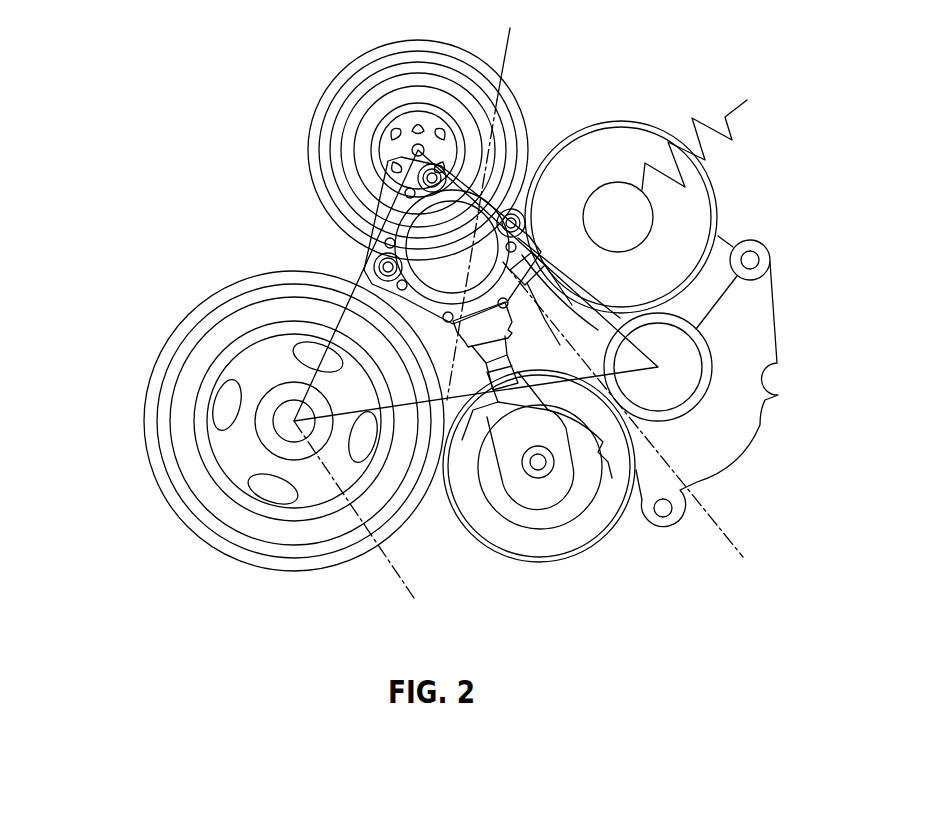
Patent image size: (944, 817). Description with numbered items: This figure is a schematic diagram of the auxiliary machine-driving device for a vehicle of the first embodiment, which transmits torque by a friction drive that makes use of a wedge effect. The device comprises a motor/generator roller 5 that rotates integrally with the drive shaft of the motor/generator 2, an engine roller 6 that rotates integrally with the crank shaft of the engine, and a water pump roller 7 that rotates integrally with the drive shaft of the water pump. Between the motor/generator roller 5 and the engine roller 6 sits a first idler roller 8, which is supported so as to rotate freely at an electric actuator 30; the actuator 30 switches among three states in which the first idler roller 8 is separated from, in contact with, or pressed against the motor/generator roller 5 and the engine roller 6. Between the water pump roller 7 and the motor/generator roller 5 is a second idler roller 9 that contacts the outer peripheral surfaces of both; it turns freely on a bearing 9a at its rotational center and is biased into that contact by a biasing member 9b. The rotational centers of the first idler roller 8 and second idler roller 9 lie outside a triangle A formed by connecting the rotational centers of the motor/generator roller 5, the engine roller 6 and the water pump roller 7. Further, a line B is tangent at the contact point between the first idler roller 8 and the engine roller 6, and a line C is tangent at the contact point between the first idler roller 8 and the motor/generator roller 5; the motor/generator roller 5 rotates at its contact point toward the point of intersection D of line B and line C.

The motor/generator 2 is at (765, 430).
The motor/generator roller 5 is at (697, 350).
The engine roller 6 is at (183, 415).
The water pump roller 7 is at (322, 100).
The first idler roller 8 is at (557, 542).
The second idler roller 9 is at (717, 193).
The bearing 9a is at (635, 225).
The biasing member 9b is at (730, 100).
The actuator 30 is at (365, 280).
The triangle A is at (358, 260).
The line B is at (415, 587).
The line C is at (742, 548).
The point of intersection D is at (476, 210).